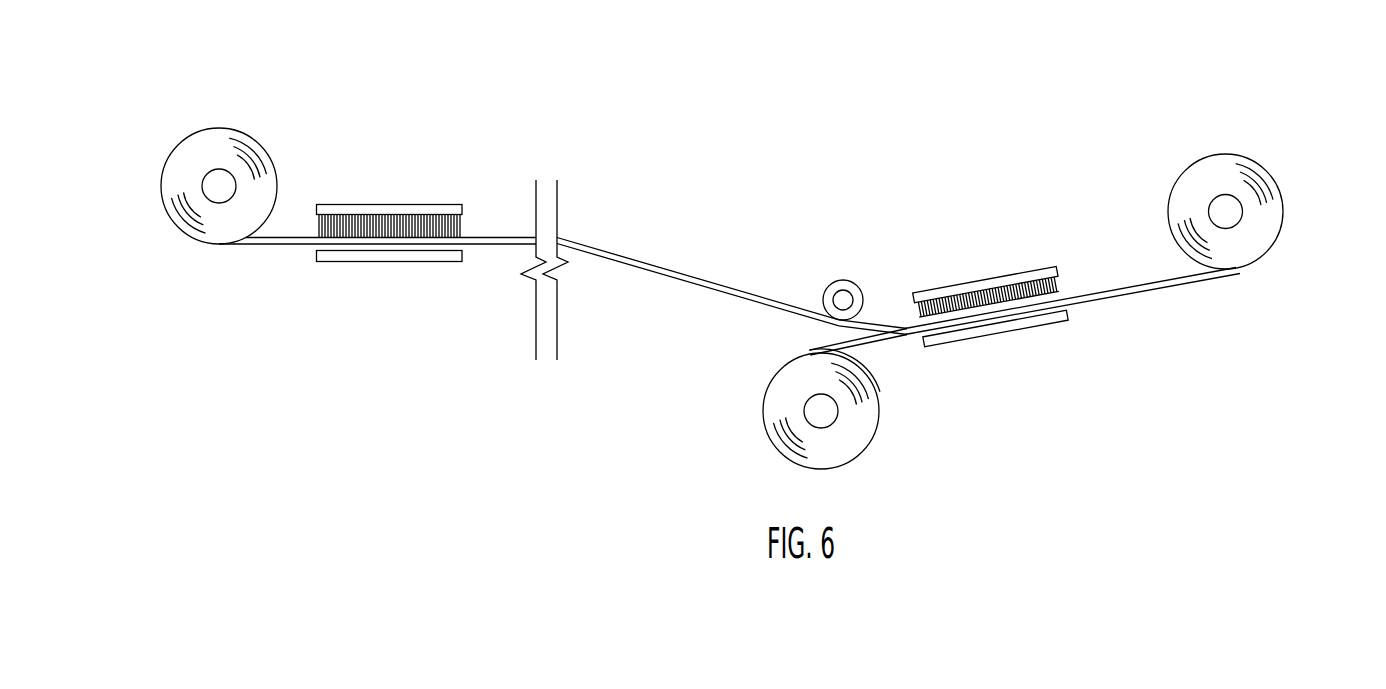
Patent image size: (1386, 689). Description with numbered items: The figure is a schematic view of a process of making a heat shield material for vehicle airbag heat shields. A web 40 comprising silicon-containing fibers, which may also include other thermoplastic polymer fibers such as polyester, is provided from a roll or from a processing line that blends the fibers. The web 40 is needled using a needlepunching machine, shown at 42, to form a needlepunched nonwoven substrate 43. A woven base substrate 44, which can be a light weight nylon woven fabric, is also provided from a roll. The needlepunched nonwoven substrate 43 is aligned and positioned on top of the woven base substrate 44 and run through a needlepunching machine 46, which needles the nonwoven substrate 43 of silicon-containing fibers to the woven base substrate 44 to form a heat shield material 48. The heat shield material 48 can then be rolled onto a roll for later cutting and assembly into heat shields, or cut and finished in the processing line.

The web 40 is at (232, 98).
The first processing station (heated plates) 42 is at (380, 197).
The needlepunched nonwoven substrate 43 is at (490, 238).
The woven base substrate 44 is at (880, 392).
The needlepunching machine 46 is at (972, 280).
The heat shield material 48 is at (1280, 185).